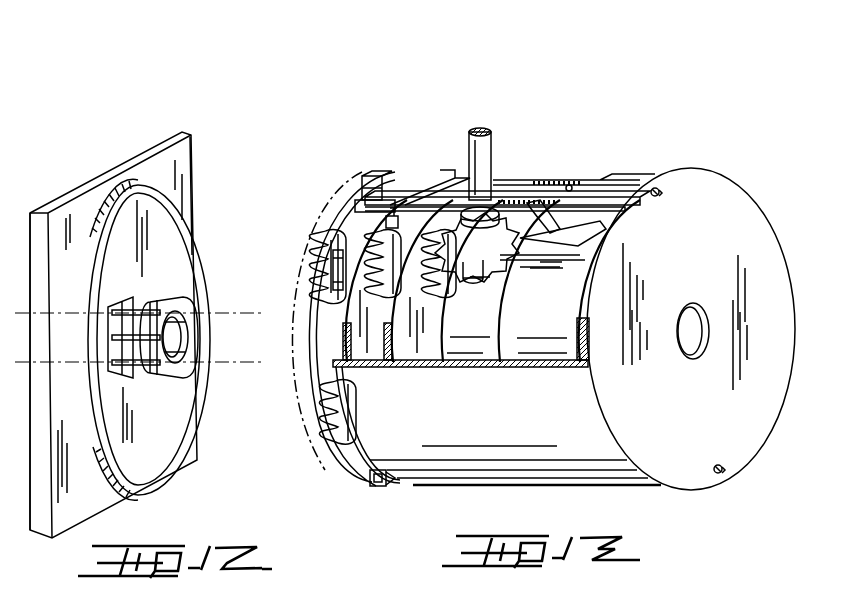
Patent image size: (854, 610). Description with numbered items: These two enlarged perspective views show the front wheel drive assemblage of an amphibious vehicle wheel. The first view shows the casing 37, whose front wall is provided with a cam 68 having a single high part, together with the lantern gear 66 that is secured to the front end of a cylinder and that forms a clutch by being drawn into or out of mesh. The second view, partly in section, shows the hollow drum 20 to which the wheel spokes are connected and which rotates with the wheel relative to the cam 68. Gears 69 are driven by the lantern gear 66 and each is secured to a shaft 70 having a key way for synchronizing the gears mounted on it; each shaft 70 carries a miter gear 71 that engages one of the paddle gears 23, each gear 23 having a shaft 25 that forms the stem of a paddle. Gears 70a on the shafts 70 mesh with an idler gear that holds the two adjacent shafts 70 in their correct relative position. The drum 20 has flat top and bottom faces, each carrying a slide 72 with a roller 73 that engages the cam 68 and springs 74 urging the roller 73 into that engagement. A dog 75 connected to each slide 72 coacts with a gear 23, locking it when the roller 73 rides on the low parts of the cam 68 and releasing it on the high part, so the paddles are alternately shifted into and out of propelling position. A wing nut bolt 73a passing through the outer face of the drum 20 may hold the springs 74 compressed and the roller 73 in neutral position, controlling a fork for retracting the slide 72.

In FIG. 13, the hollow drum 20 is at (724, 203).
In FIG. 13, the miter gear 23 is at (497, 255).
In FIG. 13, the shaft 25 is at (488, 152).
In FIG. 12, the casing 37 is at (173, 164).
In FIG. 12, the lantern gear 66 is at (185, 305).
In FIG. 12, the cam 68 is at (206, 374).
In FIG. 13, the cam 68 is at (327, 480).
In FIG. 13, the gear 69 is at (337, 228).
In FIG. 13, the shaft 70 is at (342, 264).
In FIG. 13, the gear 70a is at (381, 233).
In FIG. 13, the miter gear 71 is at (447, 235).
In FIG. 13, the slide 72 is at (497, 198).
In FIG. 13, the roller 73 is at (361, 177).
In FIG. 13, the wing nut bolt 73a is at (571, 185).
In FIG. 13, the spring 74 is at (560, 198).
In FIG. 13, the dog 75 is at (537, 203).